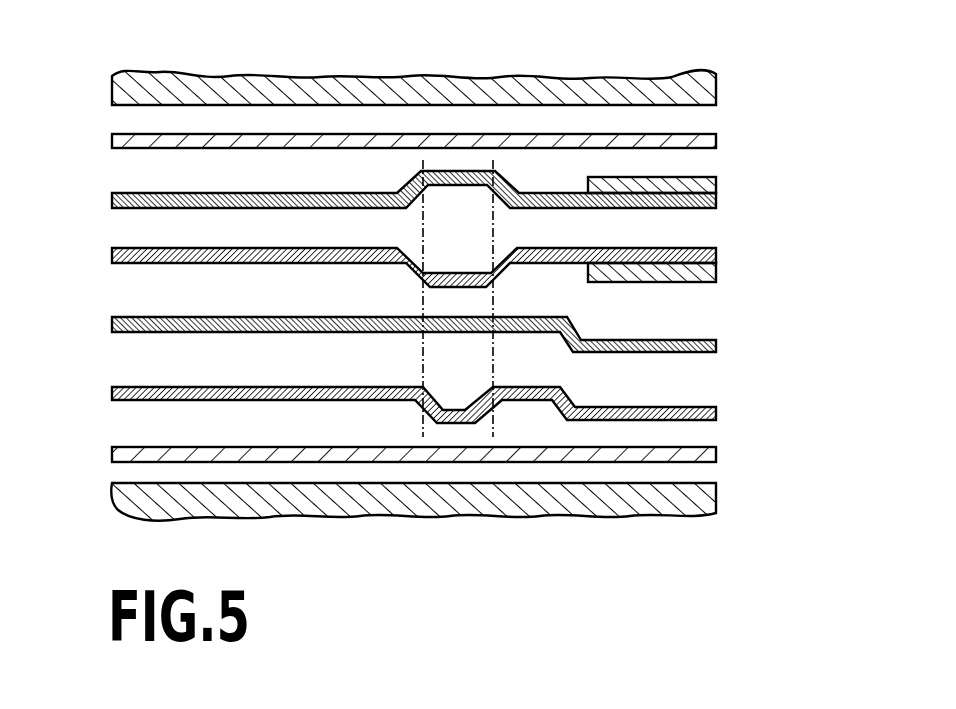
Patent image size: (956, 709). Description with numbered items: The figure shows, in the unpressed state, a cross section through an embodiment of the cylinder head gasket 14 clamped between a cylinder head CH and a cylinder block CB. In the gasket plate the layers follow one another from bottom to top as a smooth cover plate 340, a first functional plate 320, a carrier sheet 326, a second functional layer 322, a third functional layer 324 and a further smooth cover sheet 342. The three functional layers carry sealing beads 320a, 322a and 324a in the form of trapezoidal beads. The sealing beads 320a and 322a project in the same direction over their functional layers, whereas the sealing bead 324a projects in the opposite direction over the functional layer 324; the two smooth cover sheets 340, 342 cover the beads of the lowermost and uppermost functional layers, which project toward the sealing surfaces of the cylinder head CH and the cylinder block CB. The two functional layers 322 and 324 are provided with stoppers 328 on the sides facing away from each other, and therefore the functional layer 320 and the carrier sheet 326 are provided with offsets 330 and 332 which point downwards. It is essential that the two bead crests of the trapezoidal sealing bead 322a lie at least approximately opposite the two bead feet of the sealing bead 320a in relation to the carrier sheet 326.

The electrode stack / component 14 is at (754, 335).
The first functional plate 320 is at (163, 395).
The sealing bead 320a is at (500, 411).
The second functional layer 322 is at (166, 255).
The sealing bead 322a is at (400, 280).
The third functional layer 324 is at (167, 202).
The sealing bead 324a is at (522, 180).
The carrier sheet 326 is at (163, 326).
The stoppers 328 is at (698, 184).
The offset 330 is at (567, 403).
The offset 332 is at (588, 330).
The smooth cover plate 340 is at (163, 455).
The smooth cover sheet 342 is at (168, 140).
The cylinder head CH is at (720, 113).
The cylinder block CB is at (728, 469).